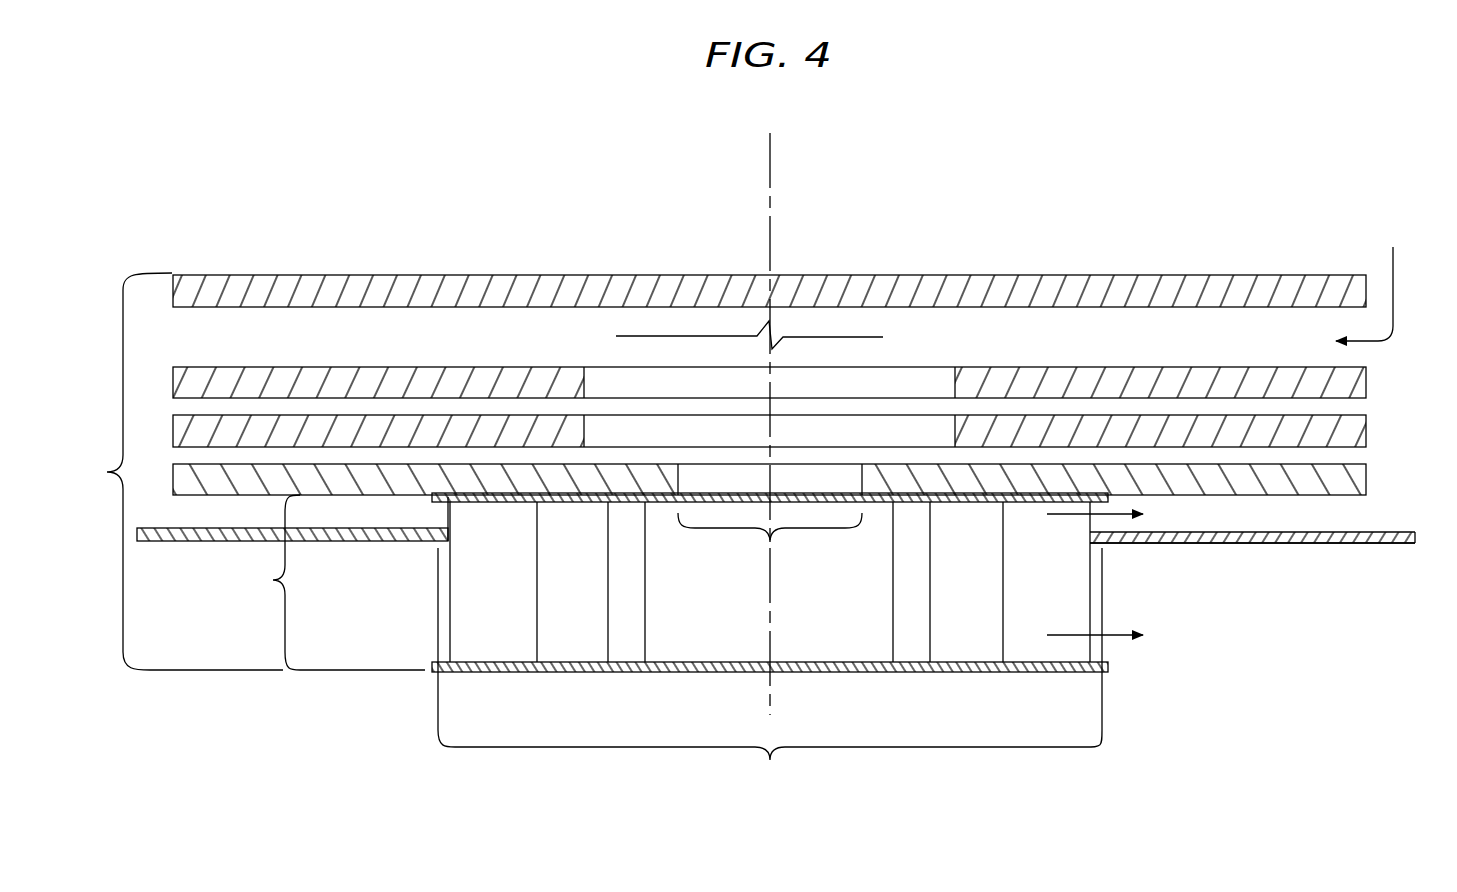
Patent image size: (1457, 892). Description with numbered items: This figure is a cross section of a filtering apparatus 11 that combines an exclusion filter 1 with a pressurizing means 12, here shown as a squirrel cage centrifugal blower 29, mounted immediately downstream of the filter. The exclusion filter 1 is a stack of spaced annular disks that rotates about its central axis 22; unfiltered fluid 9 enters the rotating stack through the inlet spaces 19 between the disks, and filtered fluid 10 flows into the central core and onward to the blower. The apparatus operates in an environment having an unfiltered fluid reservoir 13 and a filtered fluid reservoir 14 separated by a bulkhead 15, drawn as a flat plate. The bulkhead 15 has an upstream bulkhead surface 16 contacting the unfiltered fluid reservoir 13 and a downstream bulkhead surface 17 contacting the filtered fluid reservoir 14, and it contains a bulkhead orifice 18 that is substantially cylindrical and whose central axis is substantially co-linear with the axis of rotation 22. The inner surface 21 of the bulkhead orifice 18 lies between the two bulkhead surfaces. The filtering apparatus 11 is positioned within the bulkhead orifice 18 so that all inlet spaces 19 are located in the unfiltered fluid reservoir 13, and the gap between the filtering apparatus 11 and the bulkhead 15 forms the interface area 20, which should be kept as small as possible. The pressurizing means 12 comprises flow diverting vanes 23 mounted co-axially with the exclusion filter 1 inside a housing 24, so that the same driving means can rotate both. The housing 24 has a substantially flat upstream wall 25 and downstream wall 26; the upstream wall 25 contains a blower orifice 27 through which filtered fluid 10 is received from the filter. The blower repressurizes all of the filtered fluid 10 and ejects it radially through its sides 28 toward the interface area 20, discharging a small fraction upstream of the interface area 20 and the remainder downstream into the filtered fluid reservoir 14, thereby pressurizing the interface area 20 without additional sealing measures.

The exclusion filter 1 is at (807, 426).
The unfiltered fluid 9 is at (1367, 279).
The filtered fluid 10 is at (1108, 574).
The filtering apparatus 11 is at (182, 471).
The pressurizing means 12 is at (318, 582).
The squirrel cage centrifugal blower 29 is at (318, 582).
The unfiltered fluid reservoir 13 is at (1121, 164).
The filtered fluid reservoir 14 is at (1189, 714).
The bulkhead 15 is at (1244, 546).
The upstream bulkhead surface 16 is at (785, 545).
The downstream bulkhead surface 17 is at (1330, 547).
The bulkhead orifice 18 is at (770, 648).
The inlet spaces 19 is at (1347, 409).
The interface area 20 is at (343, 513).
The inner surface of bulkhead orifice 21 is at (1096, 538).
The central axis 22 is at (772, 148).
The flow diverting vanes 23 is at (537, 590).
The housing 24 is at (770, 614).
The upstream wall 25 is at (962, 505).
The downstream wall 26 is at (962, 675).
The blower orifice 27 is at (769, 521).
The sides 28 is at (1090, 596).